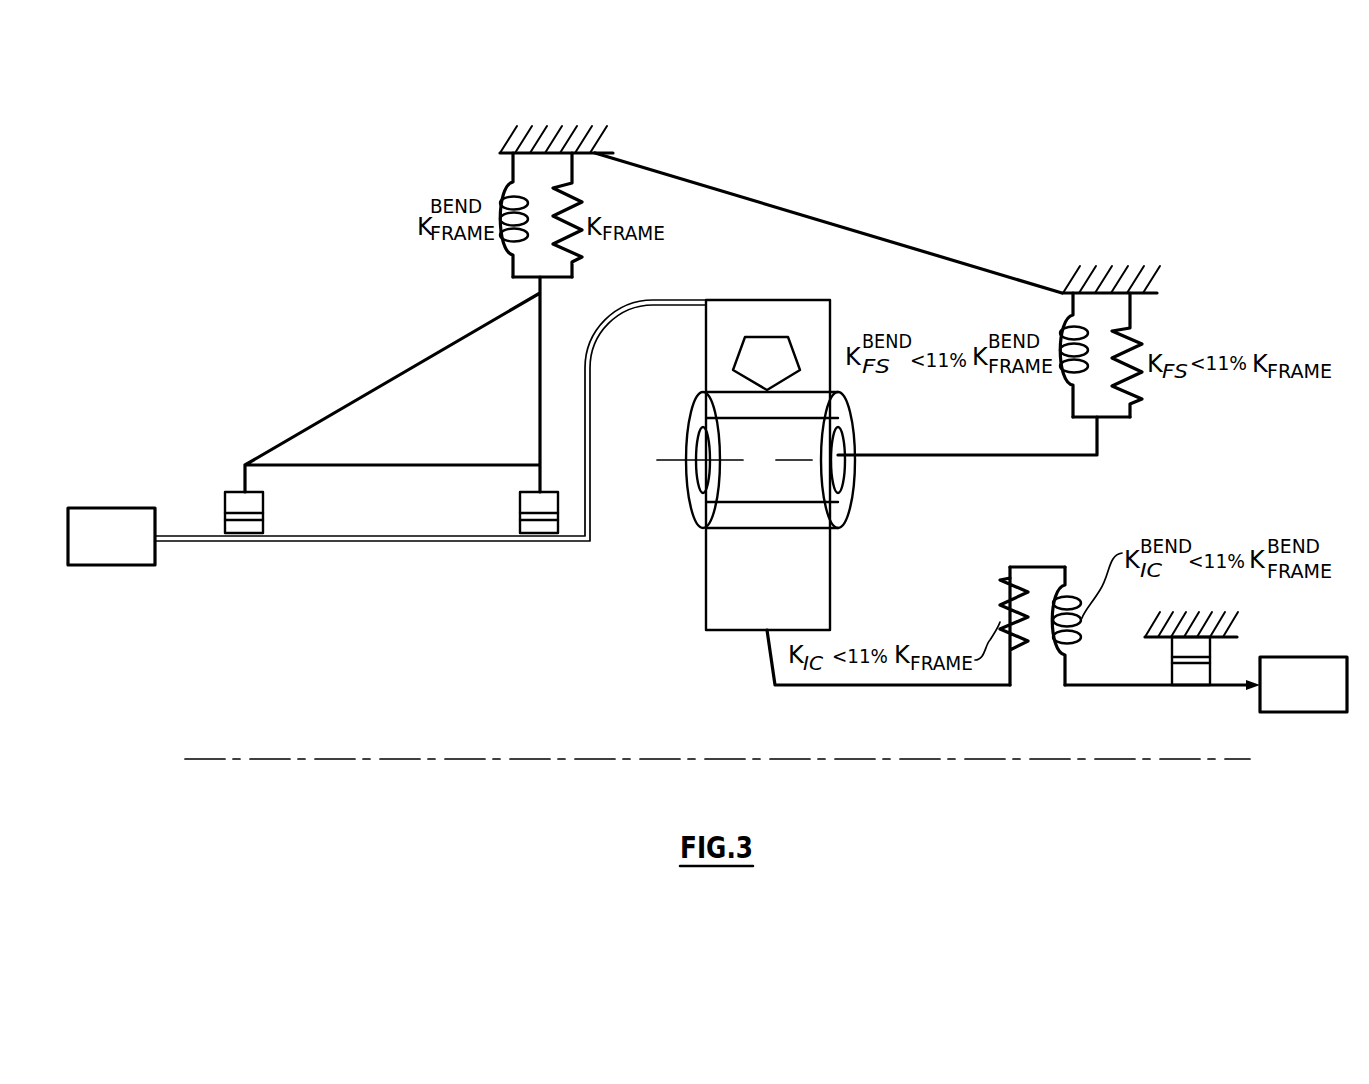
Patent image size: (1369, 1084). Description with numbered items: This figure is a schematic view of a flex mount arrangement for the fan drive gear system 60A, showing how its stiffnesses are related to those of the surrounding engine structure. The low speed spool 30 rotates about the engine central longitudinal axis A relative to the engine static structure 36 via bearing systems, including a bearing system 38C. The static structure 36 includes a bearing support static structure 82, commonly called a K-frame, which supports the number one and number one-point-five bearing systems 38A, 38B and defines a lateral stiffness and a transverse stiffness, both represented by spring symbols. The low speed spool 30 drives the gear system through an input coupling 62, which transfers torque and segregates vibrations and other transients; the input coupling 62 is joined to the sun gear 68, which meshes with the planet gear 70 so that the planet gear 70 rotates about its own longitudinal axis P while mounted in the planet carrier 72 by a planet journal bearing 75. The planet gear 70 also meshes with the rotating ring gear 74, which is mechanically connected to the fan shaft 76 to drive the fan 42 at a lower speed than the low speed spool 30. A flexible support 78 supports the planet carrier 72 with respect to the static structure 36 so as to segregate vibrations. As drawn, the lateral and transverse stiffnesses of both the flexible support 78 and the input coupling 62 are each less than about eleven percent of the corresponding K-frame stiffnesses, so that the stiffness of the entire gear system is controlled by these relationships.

The low speed spool 30 is at (1316, 699).
The engine static structure 36 is at (953, 238).
The number 1 bearing system 38A is at (230, 501).
The number 1.5 bearing system 38B is at (522, 503).
The bearing system 38C is at (1200, 648).
The fan 42 is at (124, 549).
The fan drive gear system 60A is at (588, 667).
The input coupling 62 is at (850, 700).
The sun gear 68 is at (783, 599).
The planet gear 70 is at (850, 413).
The planet carrier 72 is at (870, 432).
The ring gear 74 is at (815, 328).
The planet journal bearing 75 is at (771, 474).
The fan shaft 76 is at (483, 540).
The flexible support 78 is at (1068, 457).
The bearing support static structure 82 is at (406, 357).
The engine central longitudinal axis A is at (531, 760).
The longitudinal axis P is at (668, 460).